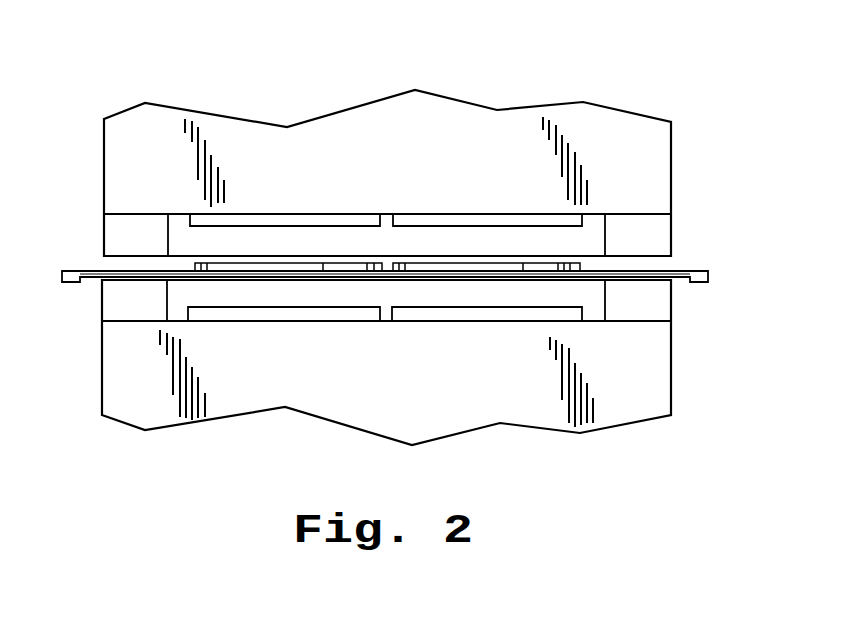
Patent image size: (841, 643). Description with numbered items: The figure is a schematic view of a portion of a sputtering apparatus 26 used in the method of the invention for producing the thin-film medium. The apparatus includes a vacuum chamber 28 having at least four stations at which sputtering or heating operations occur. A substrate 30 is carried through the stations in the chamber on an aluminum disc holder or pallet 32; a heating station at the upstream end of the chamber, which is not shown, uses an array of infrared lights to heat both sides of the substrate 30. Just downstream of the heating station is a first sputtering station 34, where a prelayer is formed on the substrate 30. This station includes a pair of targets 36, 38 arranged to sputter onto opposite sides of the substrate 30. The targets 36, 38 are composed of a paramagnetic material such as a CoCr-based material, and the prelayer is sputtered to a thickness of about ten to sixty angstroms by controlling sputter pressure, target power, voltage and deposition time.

The sputtering apparatus 26 is at (458, 93).
The vacuum chamber 28 is at (690, 241).
The substrate 30 is at (498, 263).
The pallet 32 is at (678, 281).
The first sputtering station 34 is at (472, 306).
The target 36 is at (537, 315).
The target 38 is at (433, 220).